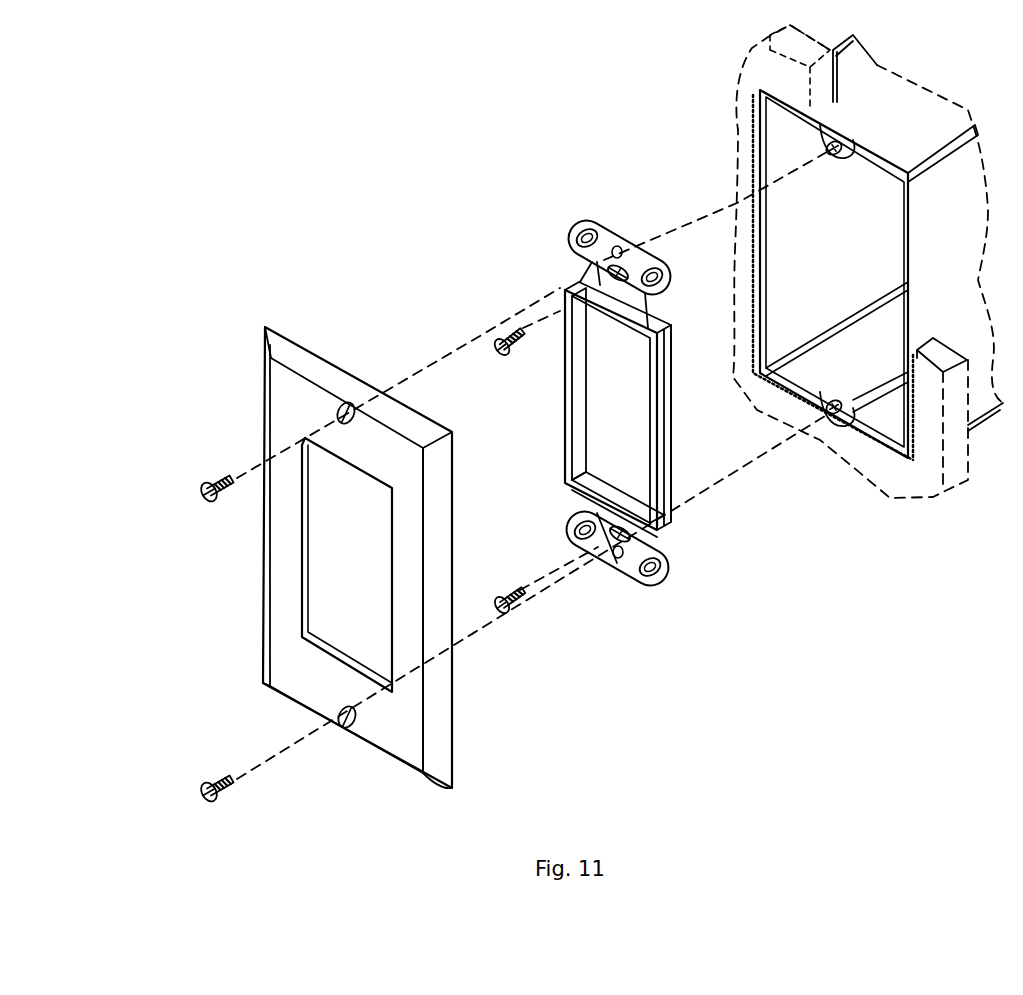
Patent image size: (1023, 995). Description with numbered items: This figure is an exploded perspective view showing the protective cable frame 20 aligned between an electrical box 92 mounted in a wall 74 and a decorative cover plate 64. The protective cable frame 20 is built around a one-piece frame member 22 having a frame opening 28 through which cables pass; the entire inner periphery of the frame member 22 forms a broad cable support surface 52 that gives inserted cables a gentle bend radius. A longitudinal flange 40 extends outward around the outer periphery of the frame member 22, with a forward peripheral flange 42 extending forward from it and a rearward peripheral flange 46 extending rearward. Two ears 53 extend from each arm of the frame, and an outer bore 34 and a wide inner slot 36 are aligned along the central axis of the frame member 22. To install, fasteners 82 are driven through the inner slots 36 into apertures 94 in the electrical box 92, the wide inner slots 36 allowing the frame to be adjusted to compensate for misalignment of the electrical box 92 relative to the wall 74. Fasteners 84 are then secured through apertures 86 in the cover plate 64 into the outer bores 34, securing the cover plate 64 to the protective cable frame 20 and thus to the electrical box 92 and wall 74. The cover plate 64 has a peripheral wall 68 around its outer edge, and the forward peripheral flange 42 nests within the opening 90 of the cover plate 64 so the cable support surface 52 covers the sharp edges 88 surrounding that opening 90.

The protective cable frame 20 is at (518, 297).
The frame member 22 is at (670, 318).
The frame opening 28 is at (568, 404).
The outer bore 34 is at (617, 247).
The inner slot 36 is at (610, 268).
The longitudinal flange 40 is at (673, 410).
The forward peripheral flange 42 is at (655, 436).
The rearward peripheral flange 46 is at (674, 450).
The cable support surface 52 is at (583, 362).
The ear 53 is at (580, 228).
The cover plate 64 is at (300, 338).
The peripheral wall 68 is at (445, 705).
The wall 74 is at (865, 242).
The fastener 82 is at (512, 354).
The fastener 84 is at (222, 480).
The aperture 86 is at (350, 425).
The sharp edge 88 is at (305, 535).
The opening 90 is at (328, 585).
The electrical box 92 is at (888, 96).
The aperture 94 is at (833, 162).